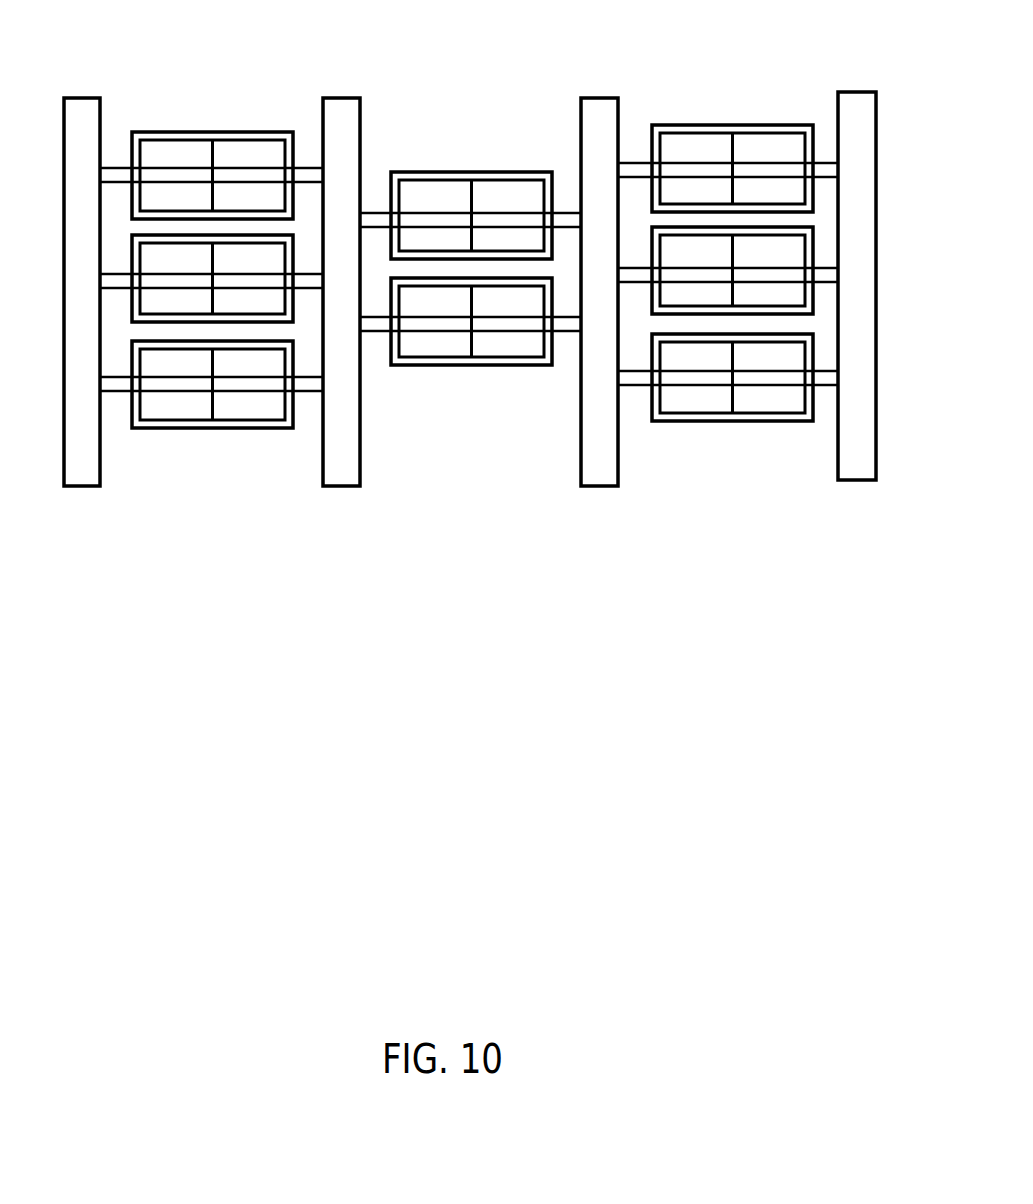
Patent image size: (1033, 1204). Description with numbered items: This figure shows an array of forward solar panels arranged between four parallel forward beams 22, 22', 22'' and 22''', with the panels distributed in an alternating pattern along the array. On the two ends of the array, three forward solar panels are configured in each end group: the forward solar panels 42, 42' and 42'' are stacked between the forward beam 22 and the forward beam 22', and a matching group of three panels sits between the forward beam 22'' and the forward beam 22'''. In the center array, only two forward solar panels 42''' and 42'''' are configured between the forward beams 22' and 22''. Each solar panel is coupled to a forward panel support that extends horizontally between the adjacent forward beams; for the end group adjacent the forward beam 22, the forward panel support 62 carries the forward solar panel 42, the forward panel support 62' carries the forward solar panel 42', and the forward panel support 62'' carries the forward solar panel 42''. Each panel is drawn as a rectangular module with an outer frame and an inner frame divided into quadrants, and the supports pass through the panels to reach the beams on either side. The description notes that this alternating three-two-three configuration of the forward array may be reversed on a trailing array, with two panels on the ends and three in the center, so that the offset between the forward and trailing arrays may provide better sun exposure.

The forward beam 22 is at (93, 253).
The forward beam 22' is at (354, 251).
The forward beam 22'' is at (616, 244).
The forward beam 22''' is at (876, 240).
The forward solar panel 42 is at (212, 138).
The forward solar panel 42' is at (160, 262).
The forward solar panel 42'' is at (212, 434).
The forward solar panel 42''' is at (471, 181).
The forward solar panel 42'''' is at (471, 369).
The forward panel support 62 is at (211, 125).
The forward panel support 62' is at (167, 262).
The forward panel support 62'' is at (211, 438).